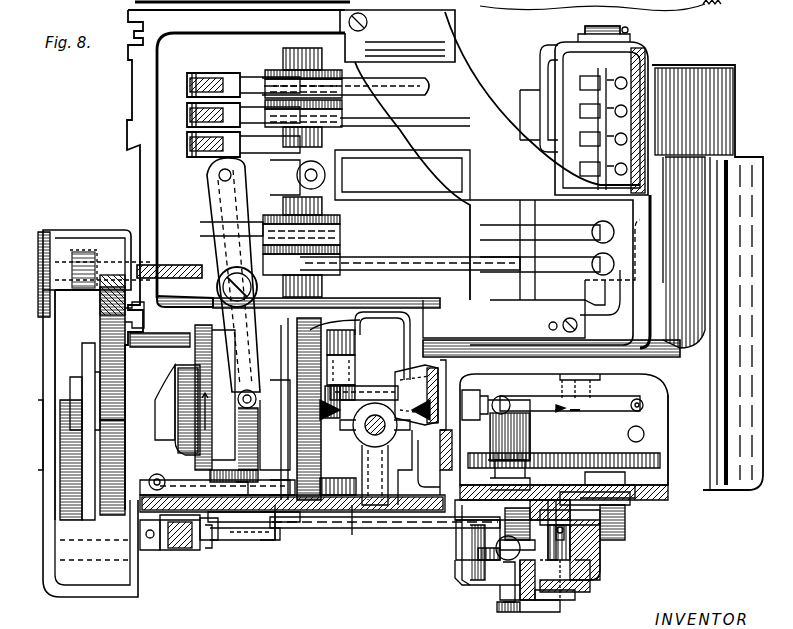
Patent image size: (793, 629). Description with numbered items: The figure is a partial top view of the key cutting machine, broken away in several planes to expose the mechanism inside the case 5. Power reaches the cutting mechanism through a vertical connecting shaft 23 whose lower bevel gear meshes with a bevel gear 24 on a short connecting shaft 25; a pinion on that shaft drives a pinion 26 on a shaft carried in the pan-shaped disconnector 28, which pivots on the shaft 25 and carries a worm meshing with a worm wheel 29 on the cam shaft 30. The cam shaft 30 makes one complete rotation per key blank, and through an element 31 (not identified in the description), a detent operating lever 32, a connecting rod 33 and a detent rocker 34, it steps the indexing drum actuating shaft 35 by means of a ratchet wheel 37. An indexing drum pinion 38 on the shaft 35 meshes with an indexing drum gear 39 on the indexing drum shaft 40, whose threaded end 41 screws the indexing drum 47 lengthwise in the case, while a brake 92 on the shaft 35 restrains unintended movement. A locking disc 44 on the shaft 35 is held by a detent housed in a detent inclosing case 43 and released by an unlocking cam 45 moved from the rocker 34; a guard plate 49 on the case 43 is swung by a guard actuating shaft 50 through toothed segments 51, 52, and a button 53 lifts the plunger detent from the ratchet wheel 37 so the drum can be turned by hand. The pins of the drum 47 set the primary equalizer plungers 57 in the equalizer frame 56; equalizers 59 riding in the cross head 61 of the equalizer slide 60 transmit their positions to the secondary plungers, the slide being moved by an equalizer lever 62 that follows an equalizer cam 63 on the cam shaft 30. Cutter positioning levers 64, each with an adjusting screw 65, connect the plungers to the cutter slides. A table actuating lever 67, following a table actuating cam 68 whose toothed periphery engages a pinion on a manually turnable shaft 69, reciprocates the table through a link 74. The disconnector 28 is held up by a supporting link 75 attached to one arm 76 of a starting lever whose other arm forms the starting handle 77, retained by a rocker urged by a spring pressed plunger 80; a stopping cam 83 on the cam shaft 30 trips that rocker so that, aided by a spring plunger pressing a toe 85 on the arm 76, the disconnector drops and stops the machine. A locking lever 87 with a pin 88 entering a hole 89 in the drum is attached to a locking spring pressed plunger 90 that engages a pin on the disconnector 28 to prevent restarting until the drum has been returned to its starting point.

The case 5 is at (140, 167).
The connecting shaft 23 is at (420, 395).
The bevel gear 24 is at (400, 462).
The short connecting shaft 25 is at (358, 515).
The pinion 26 is at (330, 340).
The disconnector 28 is at (390, 325).
The worm wheel 29 is at (300, 338).
The cam shaft 30 is at (385, 380).
The slide 31 is at (270, 415).
The detent operating lever 32 is at (282, 522).
The connecting rod 33 is at (364, 514).
The detent rocker 34 is at (478, 530).
The indexing drum actuating shaft 35 is at (492, 606).
The ratchet wheel 37 is at (485, 580).
The indexing drum pinion 38 is at (520, 445).
The indexing drum gear 39 is at (682, 432).
The indexing drum shaft 40 is at (630, 28).
The threaded end 41 is at (636, 515).
The detent inclosing case 43 is at (578, 590).
The locking disc 44 is at (470, 573).
The unlocking cam 45 is at (478, 555).
The indexing drum 47 is at (728, 127).
The guard plate 49 is at (560, 600).
The guard actuating shaft 50 is at (590, 578).
The toothed segment 51 is at (575, 545).
The toothed segment 52 is at (515, 534).
The button 53 is at (540, 598).
The equalizer frame 56 is at (545, 58).
The primary set of equalizer plungers 57 is at (614, 76).
The equalizers 59 is at (590, 170).
The equalizer slide 60 is at (418, 150).
The cross head 61 is at (572, 120).
The equalizer lever 62 is at (222, 240).
The equalizer cam 63 is at (216, 388).
The cutter positioning lever 64 is at (420, 90).
The adjusting screw 65 is at (600, 228).
The table actuating lever 67 is at (80, 512).
The table actuating cam 68 is at (100, 325).
The shaft 69 is at (72, 230).
The link 74 is at (84, 357).
The supporting link 75 is at (244, 500).
The arm of starting lever 76 is at (172, 470).
The starting handle 77 is at (182, 548).
The spring pressed plunger 80 is at (210, 545).
The stopping cam 83 is at (195, 345).
The toe 85 is at (150, 478).
The locking lever 87 is at (522, 390).
The pin 88 is at (642, 403).
The hole 89 is at (643, 430).
The locking spring pressed plunger 90 is at (496, 392).
The brake 92 is at (450, 482).